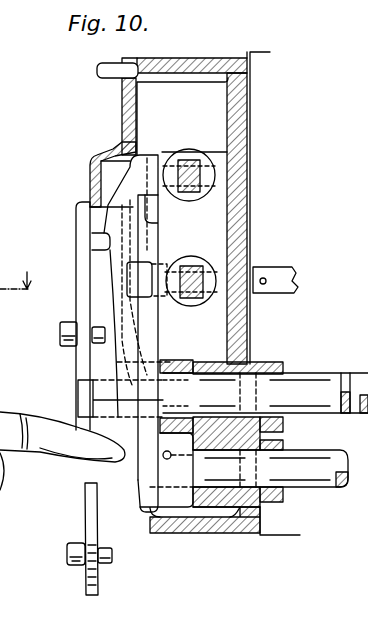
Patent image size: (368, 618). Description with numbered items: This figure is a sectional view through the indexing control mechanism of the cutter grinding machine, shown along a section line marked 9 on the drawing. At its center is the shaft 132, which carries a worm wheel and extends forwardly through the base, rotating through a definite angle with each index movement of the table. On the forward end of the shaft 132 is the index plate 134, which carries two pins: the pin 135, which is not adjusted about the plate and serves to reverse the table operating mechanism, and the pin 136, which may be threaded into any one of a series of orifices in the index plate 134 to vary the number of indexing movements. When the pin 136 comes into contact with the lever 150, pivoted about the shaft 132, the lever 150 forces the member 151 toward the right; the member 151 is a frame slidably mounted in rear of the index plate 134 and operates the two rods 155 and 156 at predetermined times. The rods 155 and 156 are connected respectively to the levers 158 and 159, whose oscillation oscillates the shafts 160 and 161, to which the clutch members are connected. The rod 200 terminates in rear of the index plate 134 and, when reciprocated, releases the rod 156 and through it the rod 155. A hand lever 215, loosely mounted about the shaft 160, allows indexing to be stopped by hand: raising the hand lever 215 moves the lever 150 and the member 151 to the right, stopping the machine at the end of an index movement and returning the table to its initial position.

The section line 9- 9 is at (15, 272).
The shaft 132 is at (78, 396).
The index plate 134 is at (83, 297).
The pin 135 is at (68, 348).
The pin 136 is at (72, 543).
The lever 150 is at (100, 243).
The member 151 is at (208, 152).
The rod 155 is at (205, 166).
The rod 156 is at (205, 267).
The lever 158 is at (120, 153).
The lever 159 is at (153, 317).
The shaft 160 is at (301, 377).
The shaft 161 is at (315, 457).
The rod 200 is at (301, 273).
The hand lever 215 is at (176, 362).